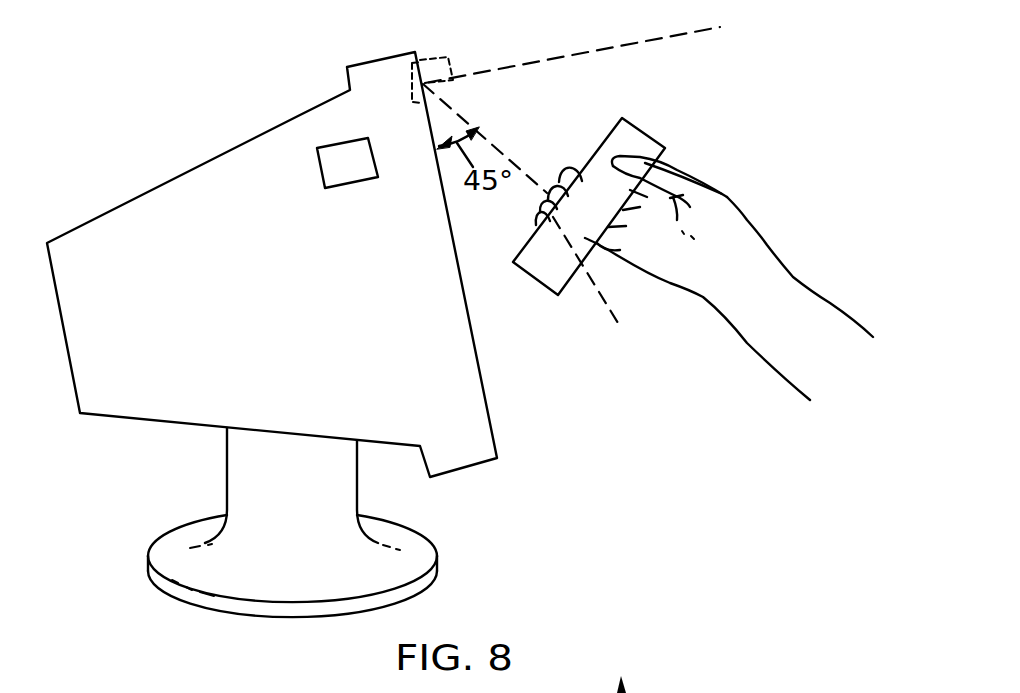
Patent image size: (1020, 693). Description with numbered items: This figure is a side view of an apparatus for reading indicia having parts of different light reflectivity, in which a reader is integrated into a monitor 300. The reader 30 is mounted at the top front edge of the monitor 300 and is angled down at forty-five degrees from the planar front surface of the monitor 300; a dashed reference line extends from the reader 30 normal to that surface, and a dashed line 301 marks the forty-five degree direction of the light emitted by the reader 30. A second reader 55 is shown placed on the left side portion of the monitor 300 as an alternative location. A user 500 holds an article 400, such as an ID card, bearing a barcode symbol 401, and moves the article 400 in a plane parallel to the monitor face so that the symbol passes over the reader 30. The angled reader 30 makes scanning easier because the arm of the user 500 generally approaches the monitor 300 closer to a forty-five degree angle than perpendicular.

The monitor 300 is at (173, 177).
The reader 55 is at (340, 143).
The reader 30 is at (427, 57).
The reception axis of receiving unit 301 is at (497, 142).
The article 400 is at (643, 132).
The barcode symbol 401 is at (600, 285).
The user 500 is at (767, 245).